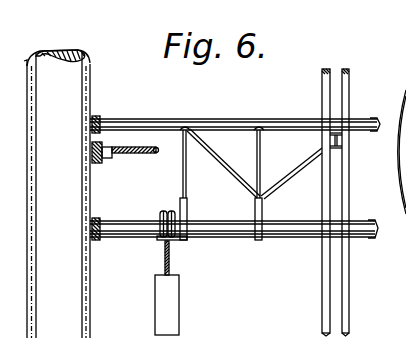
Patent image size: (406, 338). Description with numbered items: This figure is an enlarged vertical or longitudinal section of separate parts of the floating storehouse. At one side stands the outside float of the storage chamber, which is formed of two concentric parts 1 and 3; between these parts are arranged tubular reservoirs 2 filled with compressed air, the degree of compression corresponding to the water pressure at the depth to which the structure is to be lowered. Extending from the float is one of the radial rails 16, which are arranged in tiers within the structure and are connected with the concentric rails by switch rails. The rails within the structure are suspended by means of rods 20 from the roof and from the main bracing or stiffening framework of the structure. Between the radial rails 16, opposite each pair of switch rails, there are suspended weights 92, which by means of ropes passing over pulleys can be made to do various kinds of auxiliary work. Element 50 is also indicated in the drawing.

The concentric part 1 is at (93, 193).
The tubular reservoir 2 is at (77, 85).
The concentric part 3 is at (28, 64).
The radial rail 16 is at (283, 240).
The rod 20 is at (344, 185).
The lower member 50 is at (287, 332).
The weight 92 is at (177, 292).